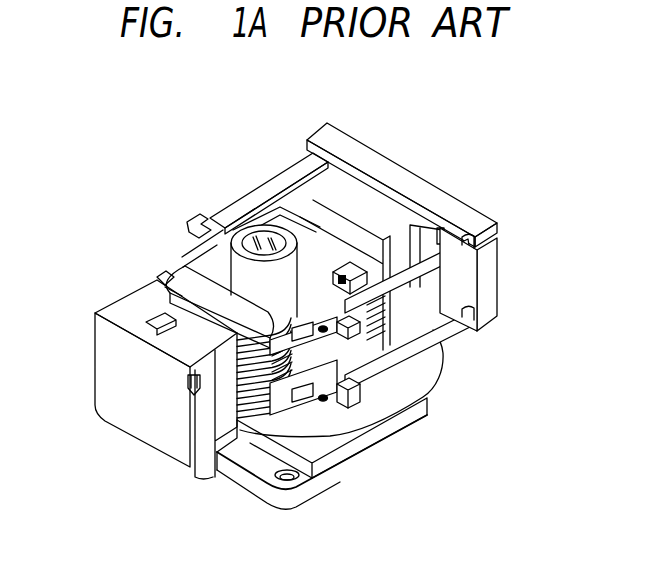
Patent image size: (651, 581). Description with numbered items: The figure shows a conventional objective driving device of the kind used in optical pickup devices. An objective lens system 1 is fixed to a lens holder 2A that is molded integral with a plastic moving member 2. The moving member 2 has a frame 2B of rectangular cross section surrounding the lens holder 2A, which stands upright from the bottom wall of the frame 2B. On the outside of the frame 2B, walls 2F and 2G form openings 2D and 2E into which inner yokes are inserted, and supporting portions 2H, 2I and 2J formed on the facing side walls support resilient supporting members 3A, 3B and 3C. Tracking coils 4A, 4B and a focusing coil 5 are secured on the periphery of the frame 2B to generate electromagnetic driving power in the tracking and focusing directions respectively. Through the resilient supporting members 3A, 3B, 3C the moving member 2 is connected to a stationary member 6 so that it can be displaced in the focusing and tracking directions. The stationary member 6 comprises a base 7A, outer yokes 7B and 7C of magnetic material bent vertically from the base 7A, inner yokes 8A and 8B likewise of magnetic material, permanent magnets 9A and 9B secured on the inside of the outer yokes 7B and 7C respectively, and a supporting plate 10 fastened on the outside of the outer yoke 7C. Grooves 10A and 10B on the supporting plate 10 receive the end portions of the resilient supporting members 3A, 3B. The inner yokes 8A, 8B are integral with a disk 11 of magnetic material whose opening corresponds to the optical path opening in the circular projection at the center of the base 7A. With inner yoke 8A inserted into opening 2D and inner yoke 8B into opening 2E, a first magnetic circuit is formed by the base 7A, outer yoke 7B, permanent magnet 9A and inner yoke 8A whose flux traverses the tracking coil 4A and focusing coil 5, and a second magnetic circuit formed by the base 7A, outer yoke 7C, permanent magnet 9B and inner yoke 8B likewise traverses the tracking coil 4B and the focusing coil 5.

The objective lens system 1 is at (253, 233).
The moving member 2 is at (136, 208).
The lens holder 2A is at (373, 210).
The frame 2B is at (213, 250).
The opening 2D is at (155, 280).
The opening 2E is at (458, 333).
The wall 2F is at (380, 200).
The wall 2G is at (205, 300).
The supporting portion 2H is at (410, 342).
The supporting portion 2I is at (360, 402).
The supporting portion 2J is at (193, 223).
The resilient supporting member 3A is at (452, 255).
The resilient supporting member 3B is at (460, 327).
The resilient supporting member 3C is at (270, 185).
The tracking coil 4A is at (255, 408).
The tracking coil 4B is at (363, 405).
The focusing coil 5 is at (270, 422).
The stationary member 6 is at (68, 357).
The base 7A is at (335, 463).
The outer yoke 7B is at (142, 433).
The outer yoke 7C is at (450, 207).
The inner yoke 8A is at (180, 272).
The inner yoke 8B is at (340, 238).
The permanent magnet 9A is at (173, 320).
The permanent magnet 9B is at (423, 213).
The supporting plate 10 is at (495, 283).
The groove 10A is at (472, 240).
The groove 10B is at (493, 303).
The disk 11 is at (324, 402).